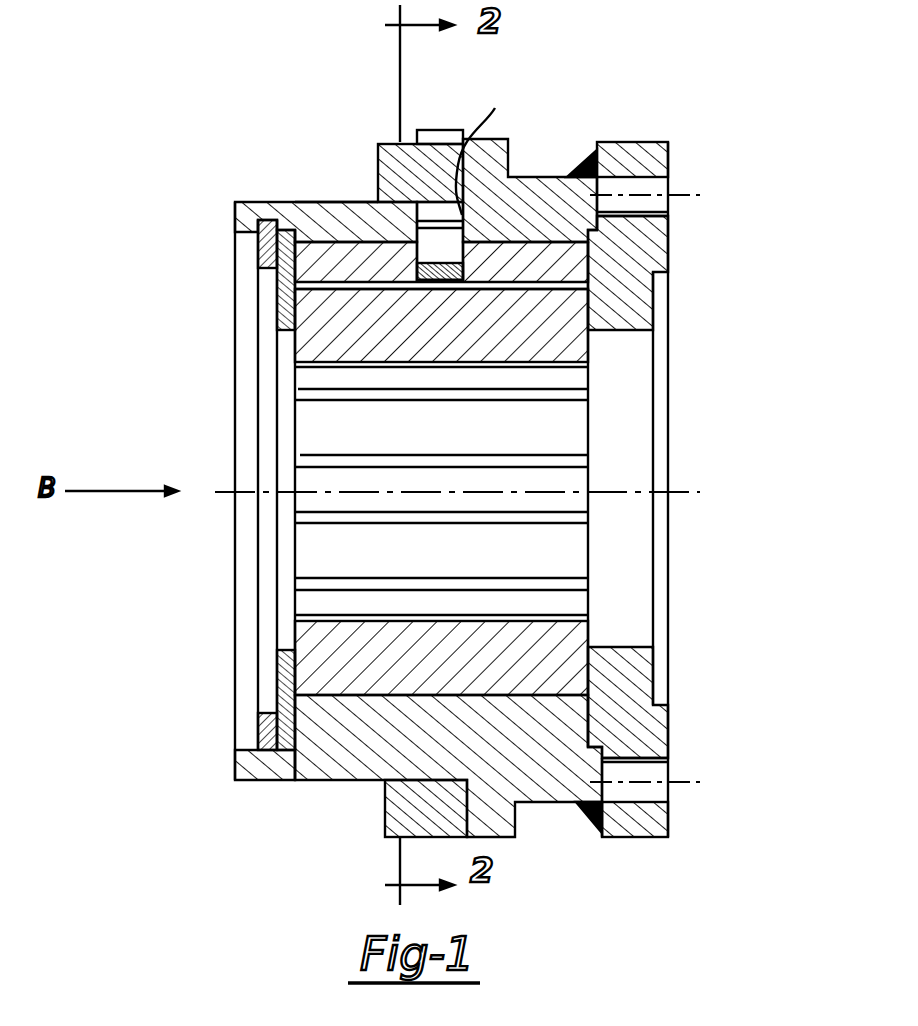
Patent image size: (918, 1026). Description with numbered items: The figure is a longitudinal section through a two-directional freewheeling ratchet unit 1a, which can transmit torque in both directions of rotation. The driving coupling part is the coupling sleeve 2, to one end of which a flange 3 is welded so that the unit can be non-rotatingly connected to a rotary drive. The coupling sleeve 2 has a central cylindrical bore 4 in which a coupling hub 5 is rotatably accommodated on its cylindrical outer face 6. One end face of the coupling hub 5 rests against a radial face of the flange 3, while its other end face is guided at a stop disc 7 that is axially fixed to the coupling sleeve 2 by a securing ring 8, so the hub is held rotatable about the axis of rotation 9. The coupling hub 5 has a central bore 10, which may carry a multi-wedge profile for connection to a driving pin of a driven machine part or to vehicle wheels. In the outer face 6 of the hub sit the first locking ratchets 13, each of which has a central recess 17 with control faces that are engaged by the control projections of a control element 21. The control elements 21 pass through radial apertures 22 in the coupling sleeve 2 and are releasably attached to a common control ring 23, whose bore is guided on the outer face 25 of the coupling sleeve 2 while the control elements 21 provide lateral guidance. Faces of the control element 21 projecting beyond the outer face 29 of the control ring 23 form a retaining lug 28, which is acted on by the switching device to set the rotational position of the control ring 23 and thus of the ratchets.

The freewheeling ratchet unit 1a is at (782, 234).
The coupling sleeve 2 is at (527, 182).
The flange 3 is at (623, 255).
The central cylindrical bore 4 is at (535, 693).
The coupling hub 5 is at (563, 333).
The cylindrical outer face 6 is at (362, 697).
The stop disc 7 is at (288, 296).
The securing ring 8 is at (275, 243).
The axis of rotation 9 is at (690, 491).
The central bore 10 is at (328, 380).
The first locking ratchets 13 is at (303, 210).
The recess 17 is at (335, 344).
The control element 21 is at (421, 129).
The radial apertures 22 is at (488, 146).
The control ring 23 is at (378, 160).
The outer face 25 is at (340, 198).
The retaining lug 28 is at (450, 129).
The outer face 29 is at (388, 142).